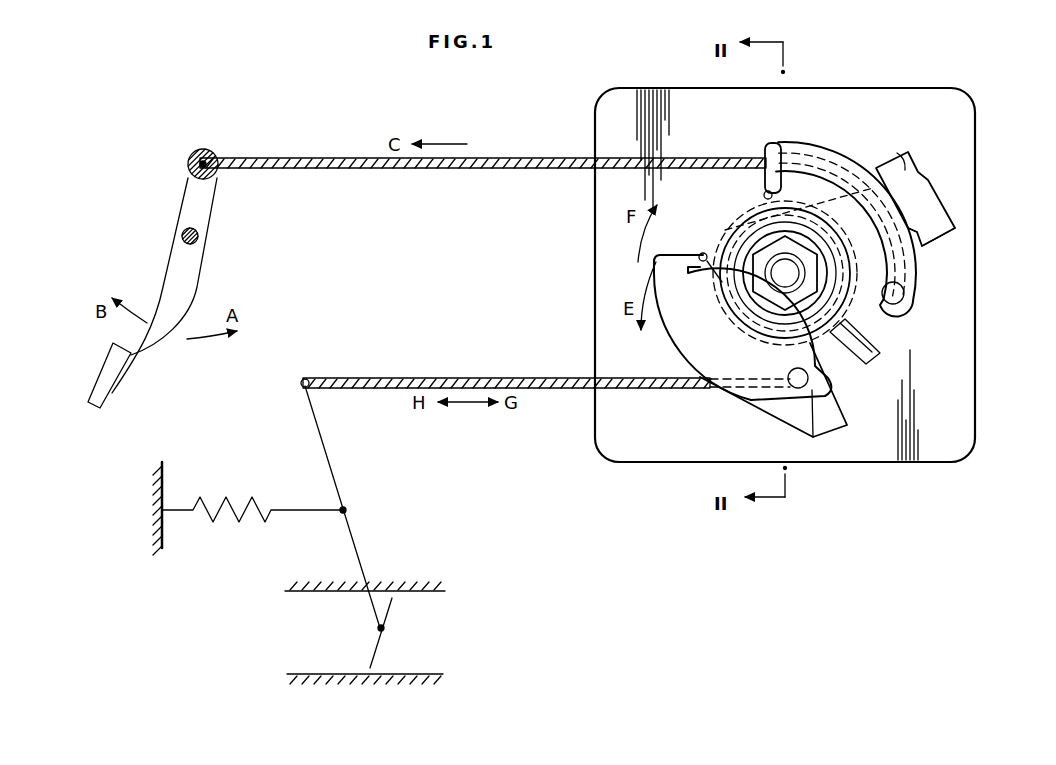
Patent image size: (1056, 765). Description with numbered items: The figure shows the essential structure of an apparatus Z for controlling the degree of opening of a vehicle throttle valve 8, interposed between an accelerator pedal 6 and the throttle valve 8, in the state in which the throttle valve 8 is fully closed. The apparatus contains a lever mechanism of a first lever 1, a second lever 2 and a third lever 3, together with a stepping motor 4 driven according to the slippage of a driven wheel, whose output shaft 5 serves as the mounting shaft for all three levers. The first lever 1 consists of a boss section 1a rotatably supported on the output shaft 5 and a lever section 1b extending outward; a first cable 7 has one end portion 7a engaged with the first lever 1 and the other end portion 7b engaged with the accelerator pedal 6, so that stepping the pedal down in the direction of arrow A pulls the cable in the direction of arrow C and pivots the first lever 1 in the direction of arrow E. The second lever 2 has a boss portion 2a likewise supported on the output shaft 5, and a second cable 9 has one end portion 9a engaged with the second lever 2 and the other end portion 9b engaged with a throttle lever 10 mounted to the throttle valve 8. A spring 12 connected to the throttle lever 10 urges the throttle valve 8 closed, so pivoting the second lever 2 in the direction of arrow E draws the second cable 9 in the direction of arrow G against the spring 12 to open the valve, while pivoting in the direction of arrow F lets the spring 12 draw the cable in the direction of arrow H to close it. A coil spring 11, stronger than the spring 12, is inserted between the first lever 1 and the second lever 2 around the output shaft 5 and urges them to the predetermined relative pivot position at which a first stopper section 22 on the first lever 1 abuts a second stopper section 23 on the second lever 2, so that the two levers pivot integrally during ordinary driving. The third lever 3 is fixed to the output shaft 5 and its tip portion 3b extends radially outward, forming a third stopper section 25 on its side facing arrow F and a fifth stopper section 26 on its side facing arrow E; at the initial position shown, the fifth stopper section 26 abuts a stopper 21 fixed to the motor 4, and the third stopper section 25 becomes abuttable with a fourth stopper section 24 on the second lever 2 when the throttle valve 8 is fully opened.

The first lever 1 is at (850, 152).
The boss section 1a is at (772, 192).
The lever section 1b is at (820, 158).
The second lever 2 is at (708, 363).
The boss portion 2a is at (855, 395).
The third lever 3 is at (934, 212).
The tip portion 3b is at (948, 234).
The motor 4 is at (945, 342).
The output shaft 5 is at (788, 273).
The accelerator pedal 6 is at (196, 252).
The first cable 7 is at (378, 171).
The one end portion of the first cable 7a is at (905, 298).
The other end portion of the first cable 7b is at (206, 152).
The throttle valve 8 is at (380, 647).
The second cable 9 is at (480, 377).
The one end portion of the second cable 9a is at (805, 388).
The other end portion of the second cable 9b is at (305, 378).
The throttle lever 10 is at (327, 455).
The coil spring 11 is at (730, 233).
The spring 12 is at (241, 497).
The stopper 21 is at (906, 165).
The first stopper section 22 is at (868, 346).
The second stopper section 23 is at (860, 352).
The fourth stopper section 24 is at (842, 405).
The third stopper section 25 is at (957, 236).
The fifth stopper section 26 is at (690, 345).
The apparatus Z is at (597, 468).